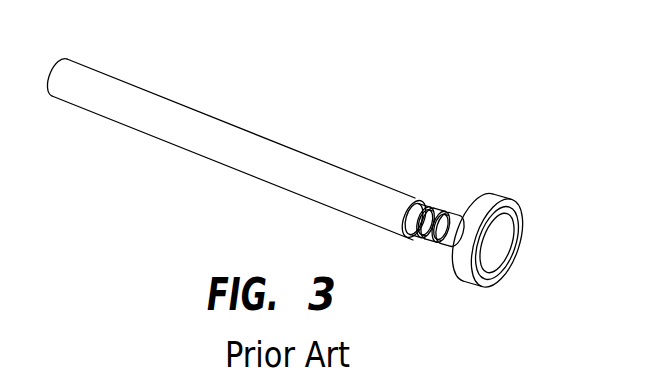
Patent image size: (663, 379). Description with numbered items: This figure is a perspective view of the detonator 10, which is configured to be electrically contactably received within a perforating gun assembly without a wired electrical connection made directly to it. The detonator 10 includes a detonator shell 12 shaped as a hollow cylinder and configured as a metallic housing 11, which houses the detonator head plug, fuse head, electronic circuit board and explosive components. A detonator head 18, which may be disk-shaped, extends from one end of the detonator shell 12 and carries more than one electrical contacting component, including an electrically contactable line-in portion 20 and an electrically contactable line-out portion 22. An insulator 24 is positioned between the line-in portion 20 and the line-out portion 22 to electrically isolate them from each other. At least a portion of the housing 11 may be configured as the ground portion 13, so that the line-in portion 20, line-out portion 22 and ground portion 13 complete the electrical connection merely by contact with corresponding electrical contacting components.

The detonator 10 is at (280, 63).
The housing 11 is at (208, 158).
The detonator shell 12 is at (289, 150).
The ground portion 13 is at (350, 202).
The detonator head 18 is at (515, 190).
The line-in portion 20 is at (497, 249).
The line-out portion 22 is at (480, 201).
The insulator 24 is at (503, 201).